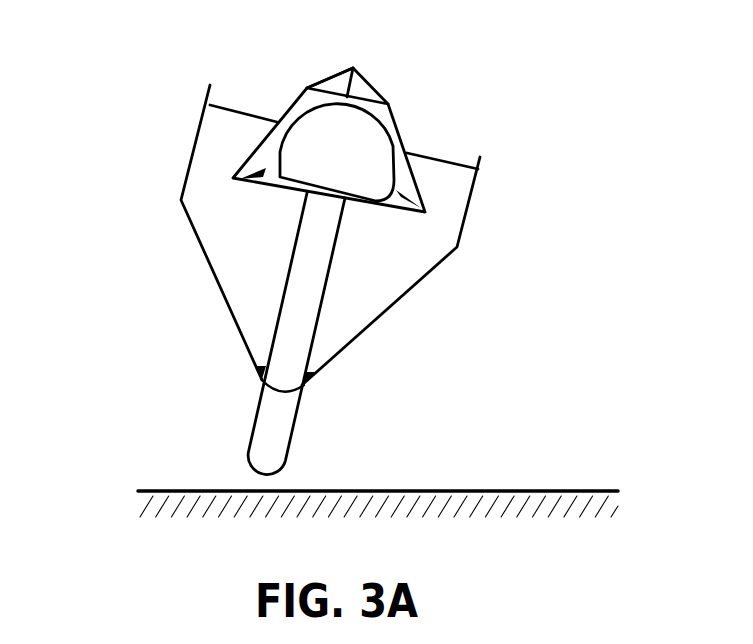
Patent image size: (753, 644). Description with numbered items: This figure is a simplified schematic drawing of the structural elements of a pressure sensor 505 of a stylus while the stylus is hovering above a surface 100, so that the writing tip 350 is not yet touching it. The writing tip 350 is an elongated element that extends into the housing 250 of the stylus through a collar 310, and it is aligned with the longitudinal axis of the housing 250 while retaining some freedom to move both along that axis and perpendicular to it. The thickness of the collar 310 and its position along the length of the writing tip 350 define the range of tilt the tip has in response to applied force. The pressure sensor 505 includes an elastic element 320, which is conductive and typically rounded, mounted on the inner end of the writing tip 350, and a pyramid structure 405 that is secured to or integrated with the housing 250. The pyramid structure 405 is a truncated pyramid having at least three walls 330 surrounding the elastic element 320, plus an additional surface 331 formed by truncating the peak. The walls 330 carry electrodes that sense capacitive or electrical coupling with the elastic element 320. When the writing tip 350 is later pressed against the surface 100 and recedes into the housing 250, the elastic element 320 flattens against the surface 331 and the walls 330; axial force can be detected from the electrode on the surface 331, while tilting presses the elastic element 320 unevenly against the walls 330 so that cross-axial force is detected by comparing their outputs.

The surface 100 is at (487, 491).
The housing 250 is at (223, 298).
The collar 310 is at (258, 393).
The elastic element 320 is at (303, 132).
The walls 330 is at (281, 115).
The surface 331 is at (323, 78).
The writing tip 350 is at (248, 452).
The pyramid structure 405 is at (409, 66).
The pressure sensor 505 is at (136, 91).